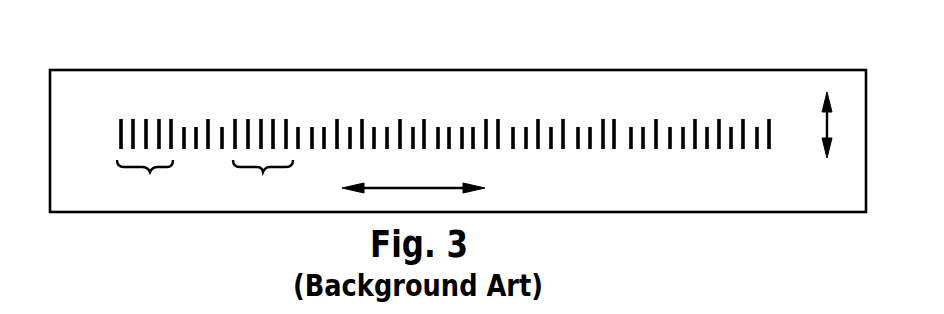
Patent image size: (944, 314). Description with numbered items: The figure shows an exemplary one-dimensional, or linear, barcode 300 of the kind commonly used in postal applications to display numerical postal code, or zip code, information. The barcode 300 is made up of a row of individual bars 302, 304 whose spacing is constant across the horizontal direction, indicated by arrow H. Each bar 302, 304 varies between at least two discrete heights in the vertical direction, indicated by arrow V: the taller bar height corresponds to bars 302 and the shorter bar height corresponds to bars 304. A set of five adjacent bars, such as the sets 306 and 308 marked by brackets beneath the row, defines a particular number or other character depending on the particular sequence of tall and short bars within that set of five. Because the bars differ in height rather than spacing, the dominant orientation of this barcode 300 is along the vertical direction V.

The barcode 300 is at (753, 83).
The taller bar 302 is at (123, 112).
The shorter bar 304 is at (135, 114).
The set of five adjacent bars 306 is at (150, 172).
The set of five adjacent bars 308 is at (263, 172).
The horizontal direction arrow H is at (387, 189).
The vertical direction arrow V is at (829, 131).